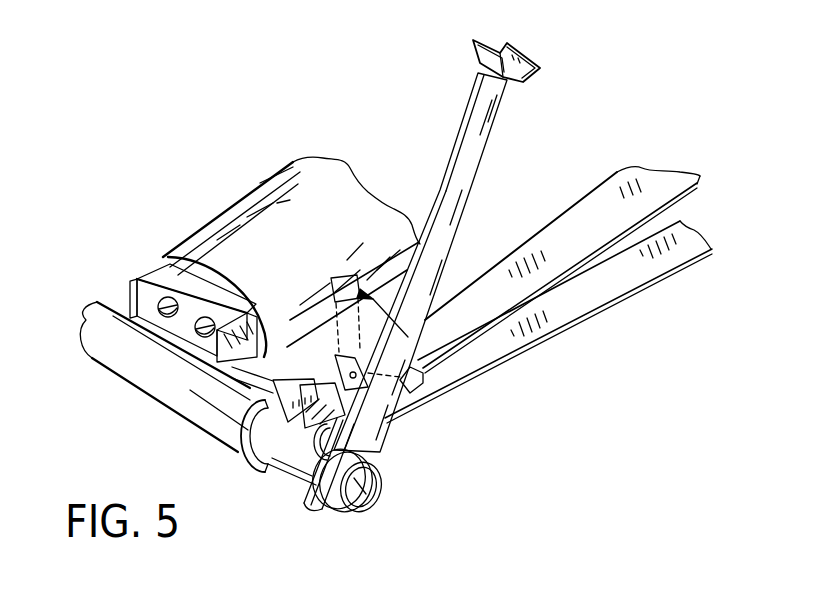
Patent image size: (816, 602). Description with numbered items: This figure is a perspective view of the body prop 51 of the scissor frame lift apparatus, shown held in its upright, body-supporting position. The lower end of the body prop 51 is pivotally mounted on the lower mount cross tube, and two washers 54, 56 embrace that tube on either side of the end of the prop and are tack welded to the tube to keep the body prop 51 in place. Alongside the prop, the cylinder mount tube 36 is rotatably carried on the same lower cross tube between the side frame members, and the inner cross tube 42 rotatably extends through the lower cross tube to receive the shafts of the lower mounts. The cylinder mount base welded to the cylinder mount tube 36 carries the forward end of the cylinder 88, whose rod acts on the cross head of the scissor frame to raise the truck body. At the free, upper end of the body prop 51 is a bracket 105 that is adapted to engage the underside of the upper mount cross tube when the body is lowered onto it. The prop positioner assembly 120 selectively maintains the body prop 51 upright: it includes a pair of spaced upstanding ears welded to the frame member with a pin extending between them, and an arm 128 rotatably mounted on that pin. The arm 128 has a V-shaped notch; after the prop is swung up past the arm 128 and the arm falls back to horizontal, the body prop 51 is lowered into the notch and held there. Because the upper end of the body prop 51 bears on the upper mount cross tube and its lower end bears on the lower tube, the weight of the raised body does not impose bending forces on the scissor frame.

The cylinder mount tube 36 is at (155, 371).
The inner cross tube 42 is at (380, 495).
The body prop 51 is at (467, 175).
The washer 54 is at (292, 481).
The washer 56 is at (334, 514).
The cylinder 88 is at (331, 240).
The bracket 105 is at (475, 54).
The prop positioner assembly 120 is at (320, 367).
The arm 128 is at (303, 303).